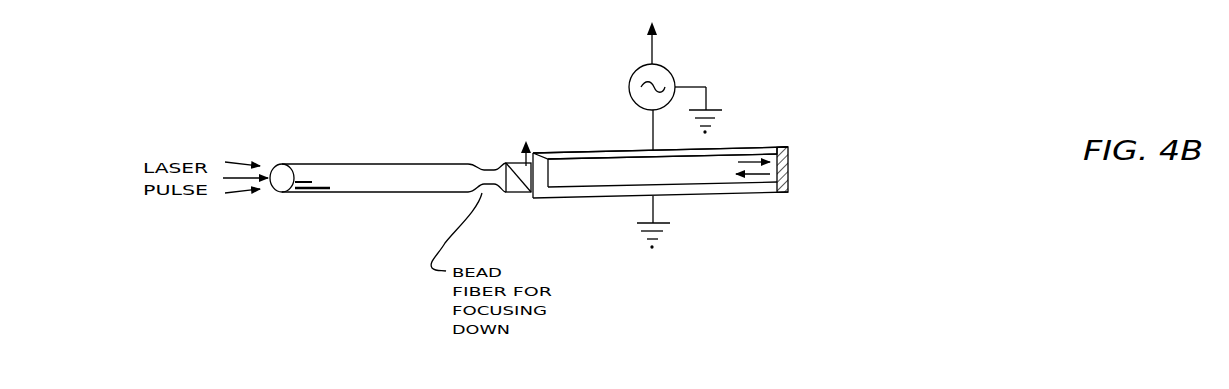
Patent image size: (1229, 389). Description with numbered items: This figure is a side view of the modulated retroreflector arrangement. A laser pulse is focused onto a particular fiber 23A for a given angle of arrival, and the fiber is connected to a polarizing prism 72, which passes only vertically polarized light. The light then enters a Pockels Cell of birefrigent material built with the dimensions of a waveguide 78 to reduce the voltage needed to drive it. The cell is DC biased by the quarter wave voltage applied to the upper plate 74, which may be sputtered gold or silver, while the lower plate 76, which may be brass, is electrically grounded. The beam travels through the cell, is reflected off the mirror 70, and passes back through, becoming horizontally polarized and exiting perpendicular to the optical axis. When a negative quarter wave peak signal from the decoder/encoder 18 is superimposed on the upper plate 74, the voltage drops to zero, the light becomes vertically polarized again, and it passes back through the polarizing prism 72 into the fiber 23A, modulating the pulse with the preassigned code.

The fiber 23A is at (340, 164).
The polarizing prism 72 is at (514, 160).
The upper plate 74 is at (740, 147).
The lower plate 76 is at (733, 197).
The waveguide 78 is at (546, 197).
The mirror 70 is at (788, 150).
The decoder/encoder 18 is at (652, 52).